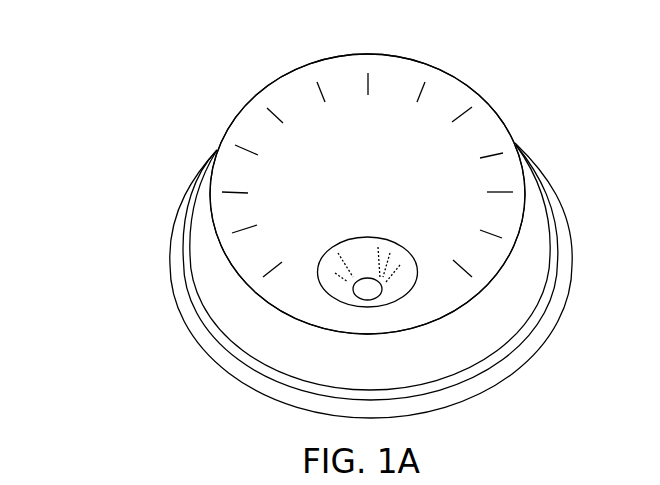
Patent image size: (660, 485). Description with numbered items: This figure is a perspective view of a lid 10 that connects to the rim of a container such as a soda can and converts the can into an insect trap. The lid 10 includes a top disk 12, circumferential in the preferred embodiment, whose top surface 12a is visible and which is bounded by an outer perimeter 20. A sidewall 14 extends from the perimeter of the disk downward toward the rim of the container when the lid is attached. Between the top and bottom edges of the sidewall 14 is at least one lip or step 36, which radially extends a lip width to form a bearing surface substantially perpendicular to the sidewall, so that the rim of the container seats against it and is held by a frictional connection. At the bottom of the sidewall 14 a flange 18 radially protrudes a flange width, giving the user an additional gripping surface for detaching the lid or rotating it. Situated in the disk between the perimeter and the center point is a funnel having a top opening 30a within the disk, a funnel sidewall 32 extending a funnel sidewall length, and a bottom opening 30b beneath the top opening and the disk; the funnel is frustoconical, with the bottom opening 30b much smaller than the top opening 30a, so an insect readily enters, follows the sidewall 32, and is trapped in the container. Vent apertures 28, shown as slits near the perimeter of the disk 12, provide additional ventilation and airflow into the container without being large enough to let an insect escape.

The lid 10 is at (150, 153).
The top disk 12 is at (447, 140).
The top surface 12a is at (525, 481).
The sidewall 14 is at (533, 207).
The flange 18 is at (540, 327).
The outer perimeter 20 is at (487, 102).
The vent apertures 28 is at (317, 97).
The top opening 30a is at (320, 285).
The bottom opening 30b is at (355, 298).
The funnel sidewall 32 is at (332, 263).
The lip or step 36 is at (545, 270).